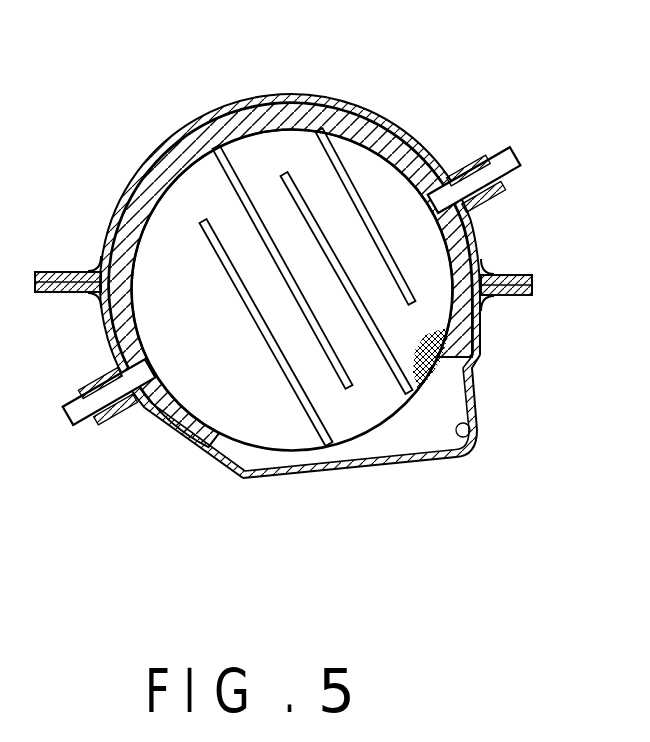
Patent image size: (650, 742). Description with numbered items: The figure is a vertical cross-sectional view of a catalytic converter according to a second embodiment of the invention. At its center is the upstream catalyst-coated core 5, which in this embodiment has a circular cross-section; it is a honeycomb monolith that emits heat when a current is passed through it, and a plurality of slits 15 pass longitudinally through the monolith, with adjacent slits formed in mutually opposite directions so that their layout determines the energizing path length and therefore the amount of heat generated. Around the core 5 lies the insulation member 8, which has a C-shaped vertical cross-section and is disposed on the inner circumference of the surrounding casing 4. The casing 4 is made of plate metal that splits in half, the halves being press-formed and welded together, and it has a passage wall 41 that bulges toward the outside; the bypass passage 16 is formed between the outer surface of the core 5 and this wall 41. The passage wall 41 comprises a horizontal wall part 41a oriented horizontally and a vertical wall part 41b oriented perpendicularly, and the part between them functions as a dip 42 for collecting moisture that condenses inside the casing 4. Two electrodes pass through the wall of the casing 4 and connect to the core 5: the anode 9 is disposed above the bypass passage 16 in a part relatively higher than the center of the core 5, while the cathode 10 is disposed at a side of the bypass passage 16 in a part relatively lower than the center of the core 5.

The casing 4 is at (68, 267).
The upstream catalyst-coated core 5 is at (278, 150).
The insulation member 8 is at (160, 172).
The anode 9 is at (498, 150).
The cathode 10 is at (77, 400).
The slits 15 is at (230, 167).
The bypass passage 16 is at (310, 457).
The passage wall 41 is at (368, 470).
The horizontal wall part 41a is at (423, 467).
The vertical wall part 41b is at (472, 380).
The dip 42 is at (472, 423).